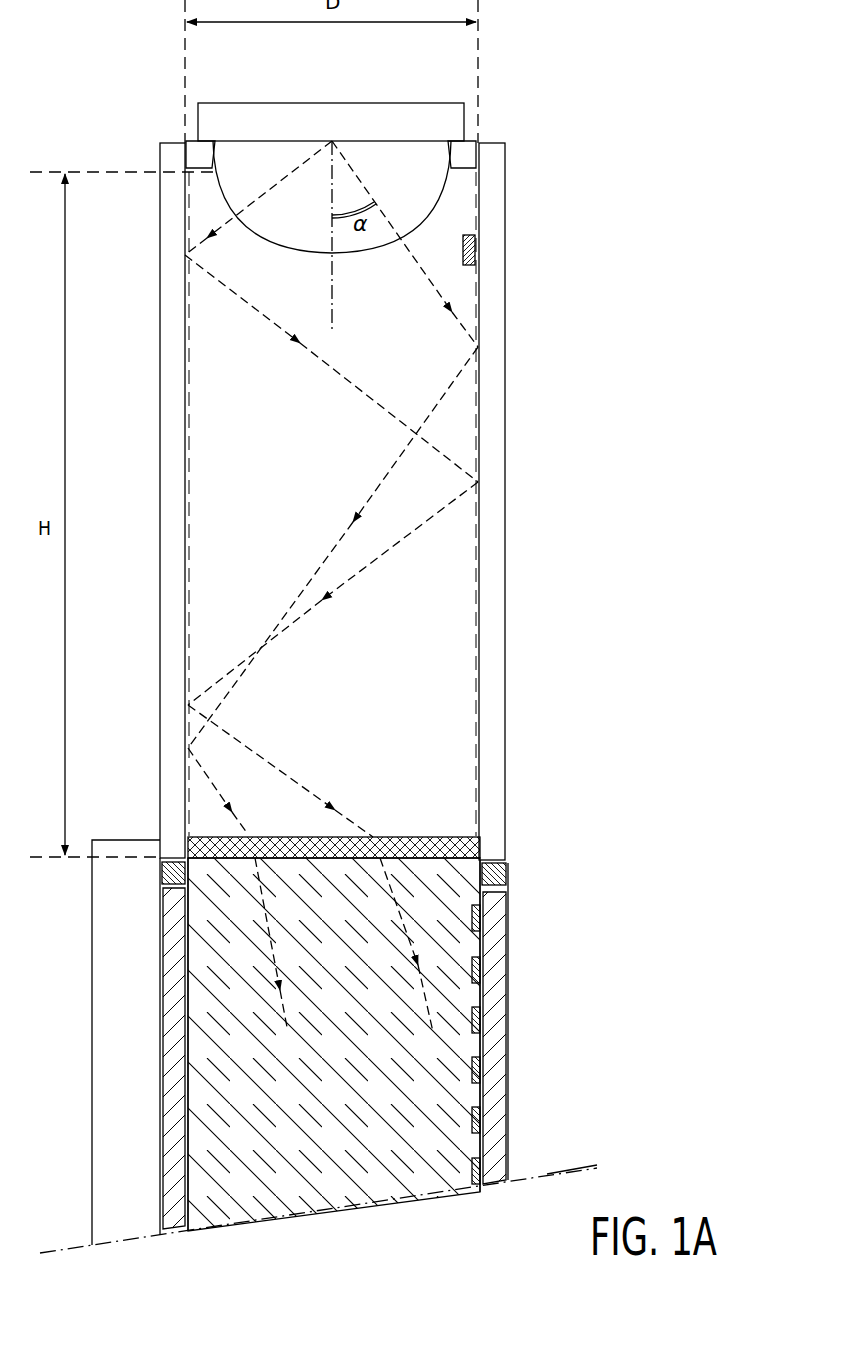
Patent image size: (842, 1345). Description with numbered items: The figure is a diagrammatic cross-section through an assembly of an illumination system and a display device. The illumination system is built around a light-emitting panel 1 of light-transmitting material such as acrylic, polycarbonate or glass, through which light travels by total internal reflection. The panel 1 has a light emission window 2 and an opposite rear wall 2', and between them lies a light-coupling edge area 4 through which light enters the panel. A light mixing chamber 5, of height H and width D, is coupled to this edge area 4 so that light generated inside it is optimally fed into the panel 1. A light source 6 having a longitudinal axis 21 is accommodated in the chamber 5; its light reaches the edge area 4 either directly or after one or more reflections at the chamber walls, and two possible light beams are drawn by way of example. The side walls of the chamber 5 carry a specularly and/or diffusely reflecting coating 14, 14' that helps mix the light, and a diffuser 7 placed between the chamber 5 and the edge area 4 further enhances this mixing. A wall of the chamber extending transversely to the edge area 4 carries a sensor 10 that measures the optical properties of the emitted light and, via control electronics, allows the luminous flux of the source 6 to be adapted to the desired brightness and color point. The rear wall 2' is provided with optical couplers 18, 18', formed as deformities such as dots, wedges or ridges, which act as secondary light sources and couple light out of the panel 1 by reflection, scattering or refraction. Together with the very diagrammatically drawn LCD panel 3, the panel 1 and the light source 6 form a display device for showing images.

The light-emitting panel 1 is at (380, 1053).
The light emission window 2 is at (128, 1046).
The rear wall 2' is at (518, 1026).
The LCD panel 3 is at (128, 1150).
The light-coupling edge area 4 is at (480, 912).
The light mixing chamber 5 is at (534, 409).
The light source 6 is at (425, 197).
The diffuser 7 is at (446, 840).
The sensor 10 is at (477, 247).
The reflecting coating 14 is at (380, 504).
The reflecting coating 14' is at (496, 143).
The optical coupler 18 is at (520, 927).
The optical coupler 18' is at (522, 977).
The longitudinal axis 21 is at (335, 283).